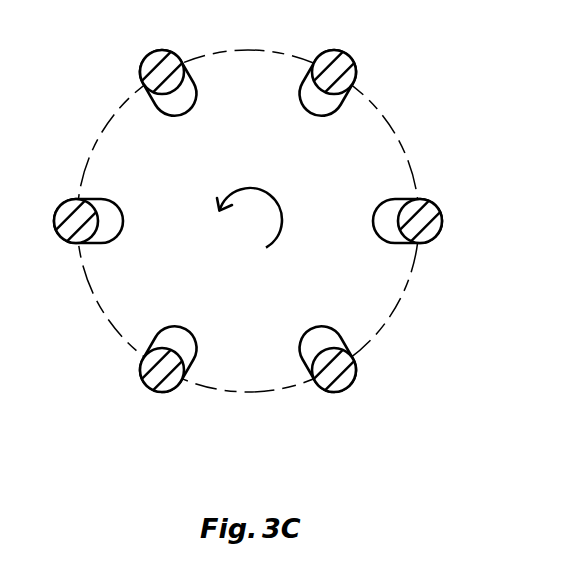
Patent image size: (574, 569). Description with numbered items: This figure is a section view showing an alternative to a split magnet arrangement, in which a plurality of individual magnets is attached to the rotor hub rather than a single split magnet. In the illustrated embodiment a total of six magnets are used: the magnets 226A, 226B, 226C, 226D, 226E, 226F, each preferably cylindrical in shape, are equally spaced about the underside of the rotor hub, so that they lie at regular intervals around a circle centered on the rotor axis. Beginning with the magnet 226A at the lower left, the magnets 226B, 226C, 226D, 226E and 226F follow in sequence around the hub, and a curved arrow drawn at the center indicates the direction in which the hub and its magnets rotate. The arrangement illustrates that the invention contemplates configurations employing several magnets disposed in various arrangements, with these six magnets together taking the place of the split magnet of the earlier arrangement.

The magnet 226A is at (142, 382).
The magnet 226B is at (70, 200).
The magnet 226C is at (146, 62).
The magnet 226D is at (352, 55).
The magnet 226E is at (434, 244).
The magnet 226F is at (344, 392).